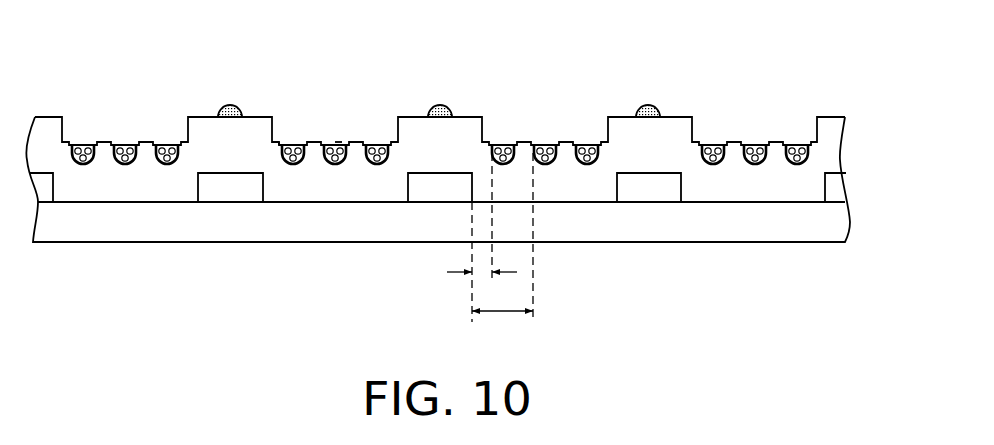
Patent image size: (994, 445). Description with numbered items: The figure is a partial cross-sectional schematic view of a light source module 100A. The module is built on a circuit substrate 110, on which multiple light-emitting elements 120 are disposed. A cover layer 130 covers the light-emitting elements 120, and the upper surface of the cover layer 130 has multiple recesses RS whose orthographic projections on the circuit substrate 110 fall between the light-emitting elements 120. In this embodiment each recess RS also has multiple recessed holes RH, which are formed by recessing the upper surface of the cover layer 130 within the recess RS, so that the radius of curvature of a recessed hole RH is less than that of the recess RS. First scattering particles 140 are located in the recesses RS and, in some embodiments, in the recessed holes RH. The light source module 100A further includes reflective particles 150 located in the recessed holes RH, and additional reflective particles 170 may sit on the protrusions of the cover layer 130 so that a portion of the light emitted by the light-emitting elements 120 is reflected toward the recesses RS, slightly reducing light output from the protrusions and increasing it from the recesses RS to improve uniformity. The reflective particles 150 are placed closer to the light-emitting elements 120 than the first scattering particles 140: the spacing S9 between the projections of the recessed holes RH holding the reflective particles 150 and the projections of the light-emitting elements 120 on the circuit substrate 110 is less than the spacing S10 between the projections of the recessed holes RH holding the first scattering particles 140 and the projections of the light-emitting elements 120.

The circuit substrate 110 is at (832, 224).
The light-emitting elements 120 is at (833, 190).
The cover layer 130 is at (832, 152).
The first scattering particles 140 is at (547, 143).
The reflective particles 150 is at (497, 143).
The reflective particles 170 is at (231, 106).
The recessed holes RH is at (299, 137).
The recesses RS is at (338, 109).
The spacing S9 is at (483, 166).
The spacing S10 is at (502, 251).
The light source module 100A is at (888, 336).